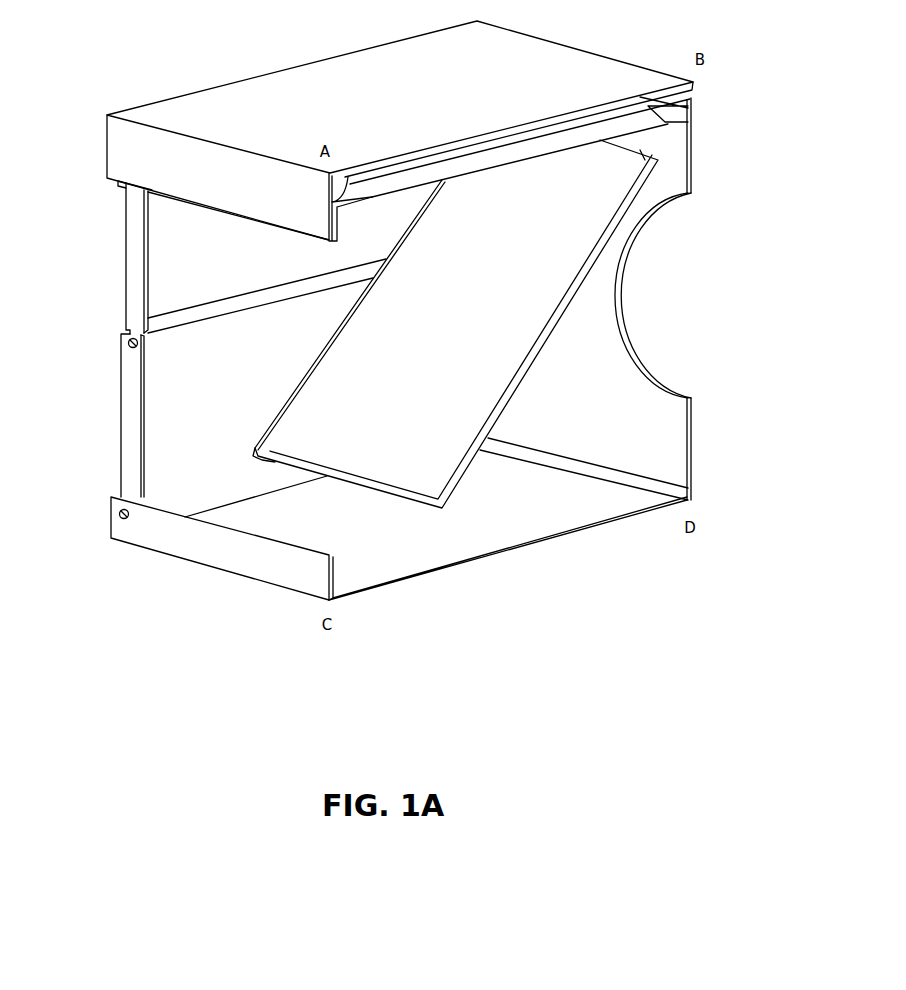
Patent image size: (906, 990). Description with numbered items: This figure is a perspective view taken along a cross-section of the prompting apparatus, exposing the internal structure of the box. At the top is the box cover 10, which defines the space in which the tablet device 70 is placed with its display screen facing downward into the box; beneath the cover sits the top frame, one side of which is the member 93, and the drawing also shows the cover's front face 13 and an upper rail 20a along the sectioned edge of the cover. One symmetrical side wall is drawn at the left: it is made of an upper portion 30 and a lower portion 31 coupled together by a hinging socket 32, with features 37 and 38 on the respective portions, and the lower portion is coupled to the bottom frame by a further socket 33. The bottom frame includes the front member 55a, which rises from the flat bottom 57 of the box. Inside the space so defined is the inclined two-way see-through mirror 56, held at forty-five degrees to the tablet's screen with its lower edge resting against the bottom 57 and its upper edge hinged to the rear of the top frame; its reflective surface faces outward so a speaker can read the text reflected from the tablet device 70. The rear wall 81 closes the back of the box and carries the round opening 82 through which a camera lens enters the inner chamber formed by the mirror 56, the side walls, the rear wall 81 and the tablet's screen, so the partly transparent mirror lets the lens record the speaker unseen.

The box cover 10 is at (240, 108).
The top housing 13 is at (133, 150).
The upper rail 20a is at (612, 102).
The tablet device 70 is at (648, 130).
The rear wall 81 is at (653, 423).
The round opening 82 is at (617, 326).
The inclined two-way see-through mirror 56 is at (390, 405).
The top frame member 93 is at (127, 186).
The upper side wall portion 30 is at (167, 247).
The upper arm side wall 37 is at (135, 243).
The socket 32 is at (127, 345).
The lower side wall portion 31 is at (172, 410).
The lower arm side wall 38 is at (137, 381).
The socket 33 is at (120, 515).
The front wall 55a is at (240, 548).
The bottom 57 is at (372, 545).